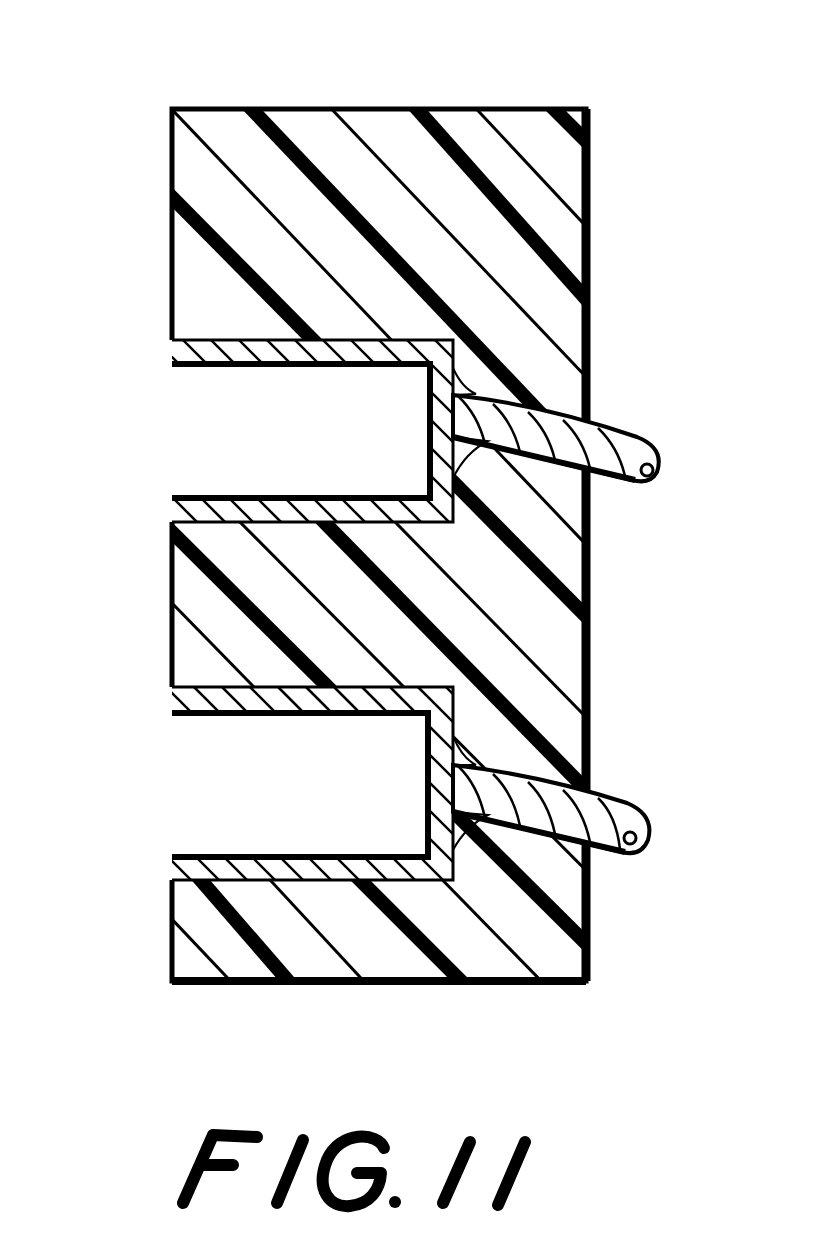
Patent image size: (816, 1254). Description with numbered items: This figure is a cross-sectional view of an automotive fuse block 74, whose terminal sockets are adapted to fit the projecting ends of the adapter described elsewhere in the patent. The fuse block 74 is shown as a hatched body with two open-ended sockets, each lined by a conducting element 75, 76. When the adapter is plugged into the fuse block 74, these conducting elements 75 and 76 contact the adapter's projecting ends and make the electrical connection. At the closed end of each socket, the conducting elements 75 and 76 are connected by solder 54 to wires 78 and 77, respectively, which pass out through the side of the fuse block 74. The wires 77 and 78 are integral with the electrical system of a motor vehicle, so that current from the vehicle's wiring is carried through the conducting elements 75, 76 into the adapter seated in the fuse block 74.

The fuse block 74 is at (398, 122).
The conducting element 75 is at (236, 337).
The conducting element 76 is at (205, 855).
The wire 78 is at (614, 422).
The wire 77 is at (613, 855).
The solder 54 is at (477, 740).